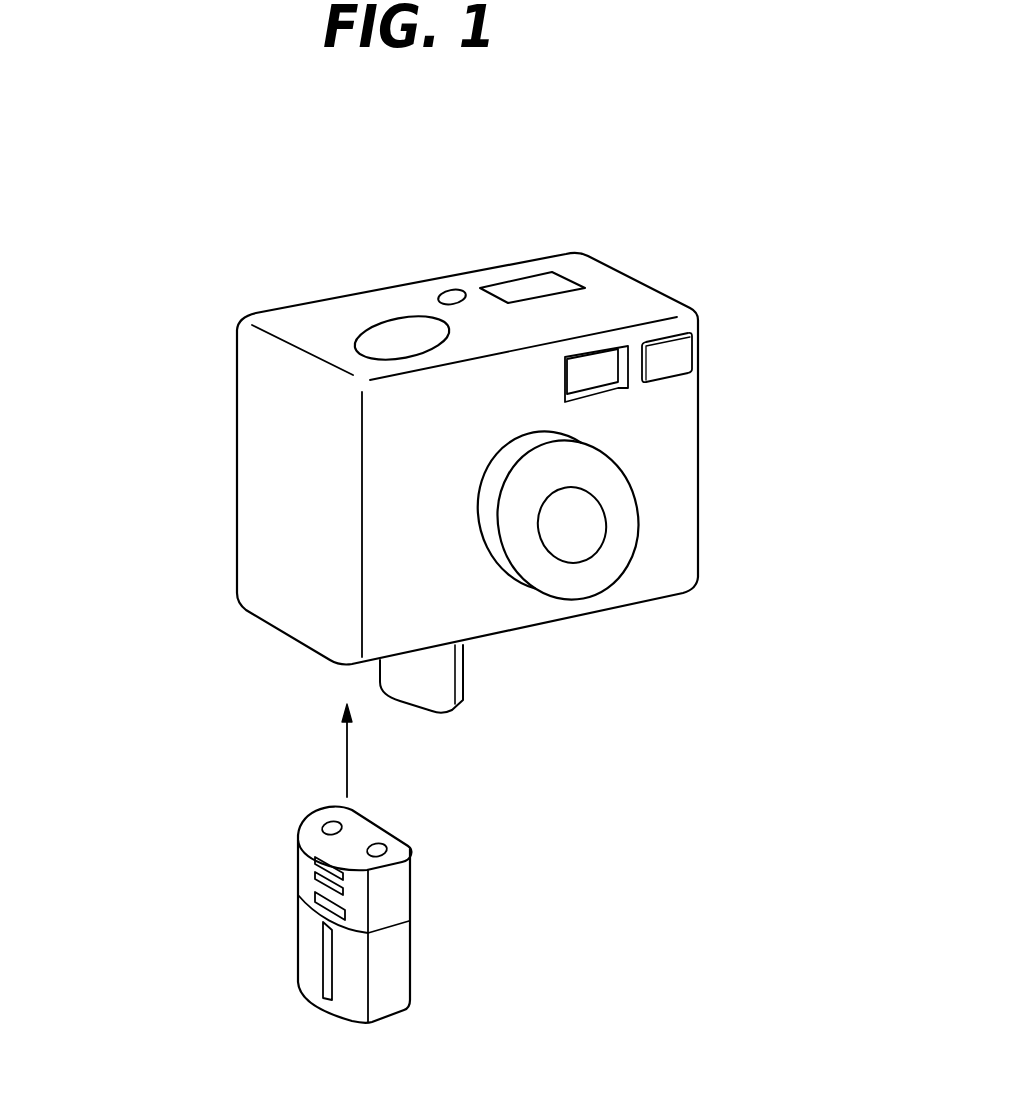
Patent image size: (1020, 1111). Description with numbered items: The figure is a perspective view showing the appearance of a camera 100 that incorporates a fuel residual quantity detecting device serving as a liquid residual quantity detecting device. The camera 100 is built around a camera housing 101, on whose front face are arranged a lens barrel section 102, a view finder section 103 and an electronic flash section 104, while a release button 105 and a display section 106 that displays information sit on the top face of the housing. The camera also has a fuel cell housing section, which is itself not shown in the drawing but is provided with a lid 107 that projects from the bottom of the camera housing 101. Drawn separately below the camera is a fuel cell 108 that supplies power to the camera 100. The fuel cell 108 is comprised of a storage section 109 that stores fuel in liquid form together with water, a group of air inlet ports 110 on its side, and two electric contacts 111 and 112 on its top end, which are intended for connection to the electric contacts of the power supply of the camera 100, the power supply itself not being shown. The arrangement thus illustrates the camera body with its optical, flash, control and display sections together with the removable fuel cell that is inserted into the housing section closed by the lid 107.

The camera 100 is at (258, 415).
The camera housing 101 is at (262, 483).
The lens barrel section 102 is at (632, 517).
The view finder section 103 is at (592, 370).
The electronic flash section 104 is at (682, 353).
The release button 105 is at (402, 333).
The display section 106 is at (523, 286).
The lid 107 is at (453, 675).
The fuel cell 108 is at (414, 897).
The storage section 109 is at (310, 938).
The air inlet ports 110 is at (305, 882).
The electric contact 111 is at (329, 823).
The electric contact 112 is at (378, 844).